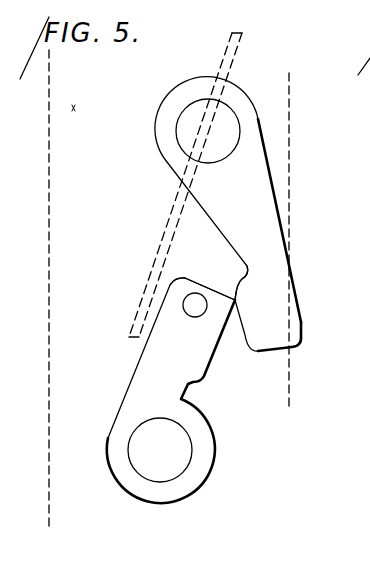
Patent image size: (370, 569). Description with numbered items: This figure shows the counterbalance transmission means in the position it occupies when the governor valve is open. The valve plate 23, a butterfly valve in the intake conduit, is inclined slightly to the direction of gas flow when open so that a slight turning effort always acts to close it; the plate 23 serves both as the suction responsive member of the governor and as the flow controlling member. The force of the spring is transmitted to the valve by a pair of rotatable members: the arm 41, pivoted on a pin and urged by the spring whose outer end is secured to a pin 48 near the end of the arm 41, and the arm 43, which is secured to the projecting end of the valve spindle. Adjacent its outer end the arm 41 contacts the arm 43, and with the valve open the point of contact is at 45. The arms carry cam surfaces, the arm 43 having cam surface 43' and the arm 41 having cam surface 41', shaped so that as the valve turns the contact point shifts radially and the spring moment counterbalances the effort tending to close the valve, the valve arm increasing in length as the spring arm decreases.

The plate 23 is at (166, 219).
The arm 41 is at (162, 390).
The cam surface 41' is at (197, 315).
The arm 43 is at (242, 199).
The cam surface 43' is at (268, 346).
The point of contact 45 is at (238, 297).
The pin 48 is at (194, 297).